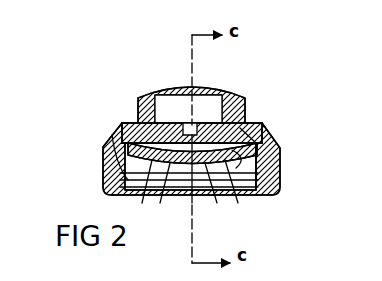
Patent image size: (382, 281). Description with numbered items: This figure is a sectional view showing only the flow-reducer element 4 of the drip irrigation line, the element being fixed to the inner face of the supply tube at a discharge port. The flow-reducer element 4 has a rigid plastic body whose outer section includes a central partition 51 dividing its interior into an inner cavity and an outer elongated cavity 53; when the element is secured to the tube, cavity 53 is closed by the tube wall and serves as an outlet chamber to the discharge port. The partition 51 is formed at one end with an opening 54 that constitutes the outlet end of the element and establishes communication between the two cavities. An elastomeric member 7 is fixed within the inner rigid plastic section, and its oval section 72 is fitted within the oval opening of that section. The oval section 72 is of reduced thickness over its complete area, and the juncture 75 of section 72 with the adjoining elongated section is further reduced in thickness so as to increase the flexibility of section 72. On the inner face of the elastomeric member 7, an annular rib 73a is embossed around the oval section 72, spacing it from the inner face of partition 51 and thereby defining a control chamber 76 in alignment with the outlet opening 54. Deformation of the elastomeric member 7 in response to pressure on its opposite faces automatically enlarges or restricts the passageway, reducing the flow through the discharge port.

The flow-reducer element 4 is at (133, 95).
The opening 54 is at (183, 124).
The outer elongated cavity 53 is at (205, 97).
The central partition 51 is at (242, 103).
The control chamber 76 is at (263, 128).
The juncture 75 is at (281, 168).
The annular rib 73a is at (118, 143).
The elastomeric member 7 is at (165, 195).
The oval section 72 is at (210, 192).